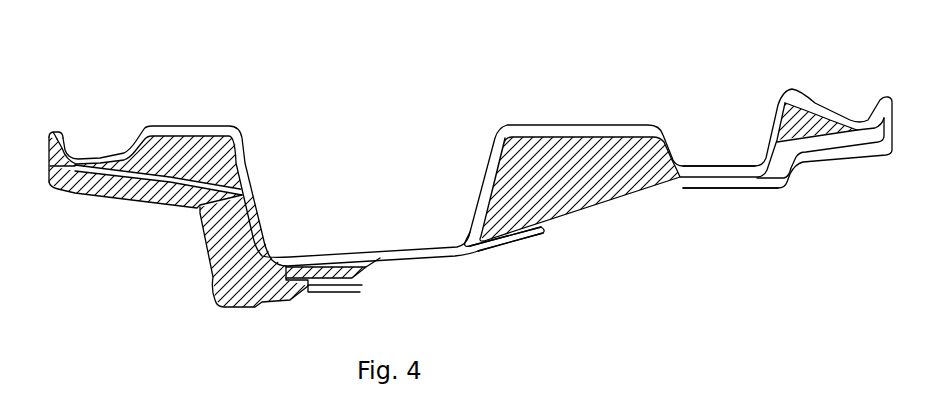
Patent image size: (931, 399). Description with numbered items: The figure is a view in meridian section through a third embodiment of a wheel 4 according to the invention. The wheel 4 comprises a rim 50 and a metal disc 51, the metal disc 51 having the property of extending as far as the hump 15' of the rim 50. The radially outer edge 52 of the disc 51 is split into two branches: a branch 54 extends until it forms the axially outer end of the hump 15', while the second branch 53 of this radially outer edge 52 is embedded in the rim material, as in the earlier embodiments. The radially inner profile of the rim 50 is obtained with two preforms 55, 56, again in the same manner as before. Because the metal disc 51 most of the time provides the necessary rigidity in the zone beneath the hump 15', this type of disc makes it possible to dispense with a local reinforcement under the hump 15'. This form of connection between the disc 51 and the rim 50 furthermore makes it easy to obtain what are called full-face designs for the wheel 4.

The wheel 4 is at (455, 295).
The hump 15' is at (58, 99).
The rim 50 is at (365, 98).
The metal disc 51 is at (170, 255).
The radially outer edge 52 is at (218, 292).
The second branch 53 is at (340, 273).
The branch 54 is at (115, 188).
The preform 55 is at (544, 232).
The preform 56 is at (158, 180).